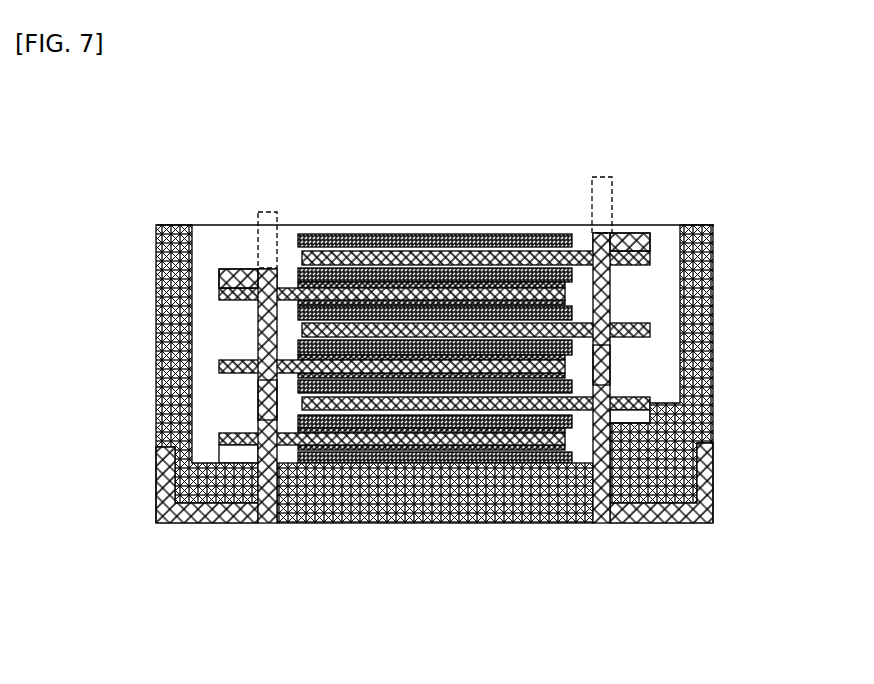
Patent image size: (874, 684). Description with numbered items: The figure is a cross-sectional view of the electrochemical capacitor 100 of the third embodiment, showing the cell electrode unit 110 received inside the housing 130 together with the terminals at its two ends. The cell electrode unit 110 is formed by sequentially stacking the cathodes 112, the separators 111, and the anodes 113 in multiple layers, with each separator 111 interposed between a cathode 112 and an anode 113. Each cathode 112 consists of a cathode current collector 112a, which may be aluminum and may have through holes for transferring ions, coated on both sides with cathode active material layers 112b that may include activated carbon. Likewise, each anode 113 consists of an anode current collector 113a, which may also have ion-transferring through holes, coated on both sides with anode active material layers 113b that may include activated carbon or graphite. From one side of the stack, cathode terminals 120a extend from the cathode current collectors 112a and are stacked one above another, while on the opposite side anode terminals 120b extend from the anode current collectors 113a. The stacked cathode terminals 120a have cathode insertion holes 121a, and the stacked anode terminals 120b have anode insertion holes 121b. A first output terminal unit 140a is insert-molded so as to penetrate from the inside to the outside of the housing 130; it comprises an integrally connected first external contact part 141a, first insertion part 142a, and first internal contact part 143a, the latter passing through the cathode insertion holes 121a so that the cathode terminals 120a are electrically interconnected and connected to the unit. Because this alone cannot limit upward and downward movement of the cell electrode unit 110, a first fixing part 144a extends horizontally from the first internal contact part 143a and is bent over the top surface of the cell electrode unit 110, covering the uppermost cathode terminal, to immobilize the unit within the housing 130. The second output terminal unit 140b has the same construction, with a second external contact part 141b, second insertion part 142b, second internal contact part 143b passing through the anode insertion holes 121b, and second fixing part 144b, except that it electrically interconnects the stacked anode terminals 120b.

The electrochemical capacitor 100 is at (71, 98).
The cell electrode unit 110 is at (524, 230).
The separators 111 is at (480, 240).
The cathodes 112 is at (470, 590).
The cathode current collectors 112a is at (367, 442).
The cathode active material layers 112b is at (435, 442).
The anodes 113 is at (428, 163).
The anode current collectors 113a is at (327, 250).
The anode active material layers 113b is at (395, 250).
The cathode terminals 120a is at (157, 310).
The anode terminals 120b is at (633, 265).
The cathode insertion holes 121a is at (237, 295).
The anode insertion holes 121b is at (655, 242).
The housing 130 is at (500, 497).
The first output terminal unit 140a is at (150, 523).
The second output terminal unit 140b is at (718, 523).
The first external contact part 141a is at (210, 510).
The second external contact part 141b is at (657, 512).
The first insertion part 142a is at (279, 485).
The second insertion part 142b is at (594, 490).
The first internal contact part 143a is at (262, 400).
The second internal contact part 143b is at (607, 363).
The first fixing part 144a is at (233, 270).
The second fixing part 144b is at (635, 245).